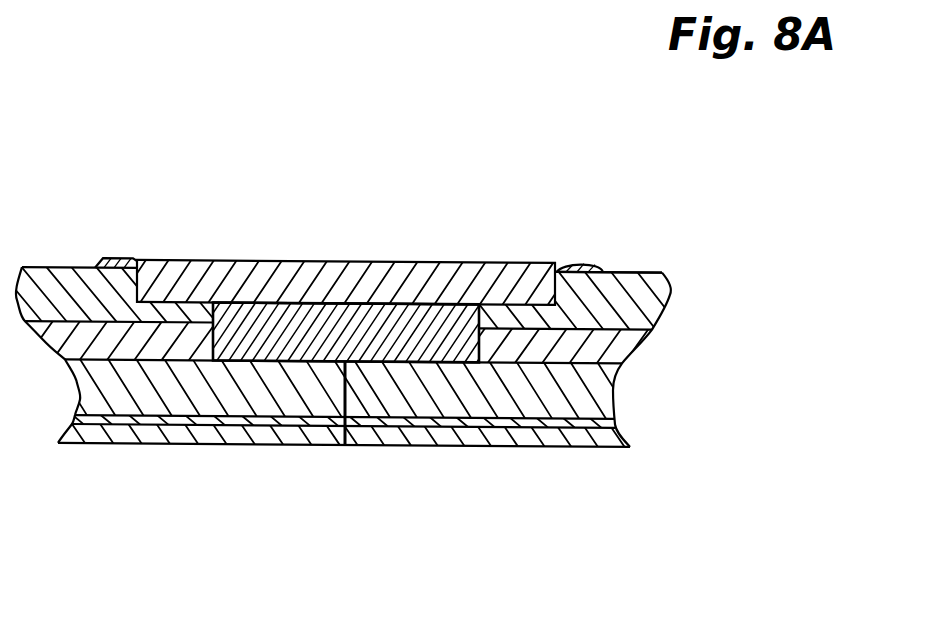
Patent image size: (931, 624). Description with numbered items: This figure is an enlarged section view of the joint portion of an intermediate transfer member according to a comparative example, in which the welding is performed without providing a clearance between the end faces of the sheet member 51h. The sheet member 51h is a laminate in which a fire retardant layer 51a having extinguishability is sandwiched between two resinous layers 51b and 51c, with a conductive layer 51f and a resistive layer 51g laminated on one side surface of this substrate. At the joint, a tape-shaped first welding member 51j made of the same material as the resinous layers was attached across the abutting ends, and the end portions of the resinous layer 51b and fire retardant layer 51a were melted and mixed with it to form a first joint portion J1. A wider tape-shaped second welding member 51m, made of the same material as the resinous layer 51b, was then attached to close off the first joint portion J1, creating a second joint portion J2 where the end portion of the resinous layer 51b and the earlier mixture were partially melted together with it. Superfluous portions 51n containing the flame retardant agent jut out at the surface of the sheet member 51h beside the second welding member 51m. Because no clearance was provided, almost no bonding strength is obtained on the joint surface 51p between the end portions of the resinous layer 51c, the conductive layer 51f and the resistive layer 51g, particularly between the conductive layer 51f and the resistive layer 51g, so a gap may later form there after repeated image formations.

The second welding member 51m is at (435, 269).
The resinous layer 51b is at (642, 296).
The fire retardant layer 51a is at (623, 342).
The resinous layer 51c is at (588, 388).
The conductive layer 51f is at (600, 420).
The resistive layer 51g is at (520, 434).
The superfluous portions 51n is at (110, 256).
The sheet member 51h is at (635, 263).
The joint surface 51p is at (338, 398).
The first welding member 51j is at (383, 337).
The first joint portion J1 is at (342, 423).
The second joint portion J2 is at (339, 288).